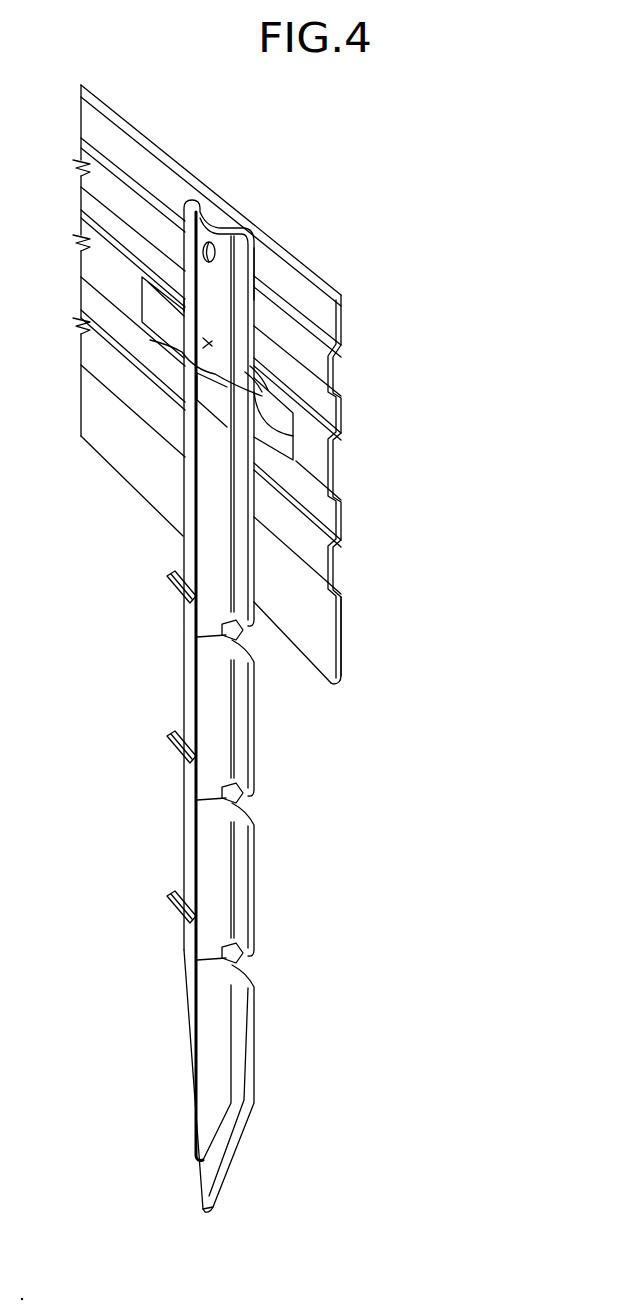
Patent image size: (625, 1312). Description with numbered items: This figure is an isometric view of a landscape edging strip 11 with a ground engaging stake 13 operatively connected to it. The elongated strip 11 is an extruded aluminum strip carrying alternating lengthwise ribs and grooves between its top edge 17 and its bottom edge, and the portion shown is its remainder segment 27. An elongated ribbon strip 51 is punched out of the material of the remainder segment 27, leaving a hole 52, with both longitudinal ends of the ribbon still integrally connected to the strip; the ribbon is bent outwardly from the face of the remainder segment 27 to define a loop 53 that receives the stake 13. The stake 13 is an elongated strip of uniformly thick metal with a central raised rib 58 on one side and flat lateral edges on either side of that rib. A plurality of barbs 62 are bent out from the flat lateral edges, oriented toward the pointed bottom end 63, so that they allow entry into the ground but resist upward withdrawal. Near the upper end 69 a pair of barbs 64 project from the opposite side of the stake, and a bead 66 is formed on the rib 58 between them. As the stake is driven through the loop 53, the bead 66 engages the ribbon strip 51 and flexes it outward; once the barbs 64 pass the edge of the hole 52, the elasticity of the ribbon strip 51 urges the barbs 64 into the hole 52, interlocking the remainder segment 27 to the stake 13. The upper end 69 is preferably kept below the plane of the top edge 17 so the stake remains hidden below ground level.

The elongated strip 11 is at (344, 297).
The stake 13 is at (256, 764).
The top edge 17 is at (281, 241).
The remainder segment 27 is at (344, 641).
The elongated ribbon strip 51 is at (160, 366).
The hole 52 is at (296, 425).
The loop 53 is at (184, 300).
The raised rib 58 is at (210, 1017).
The barbs 62 is at (196, 637).
The bottom end 63 is at (215, 1193).
The barbs 64 is at (258, 381).
The bead 66 is at (207, 343).
The upper end 69 is at (214, 230).